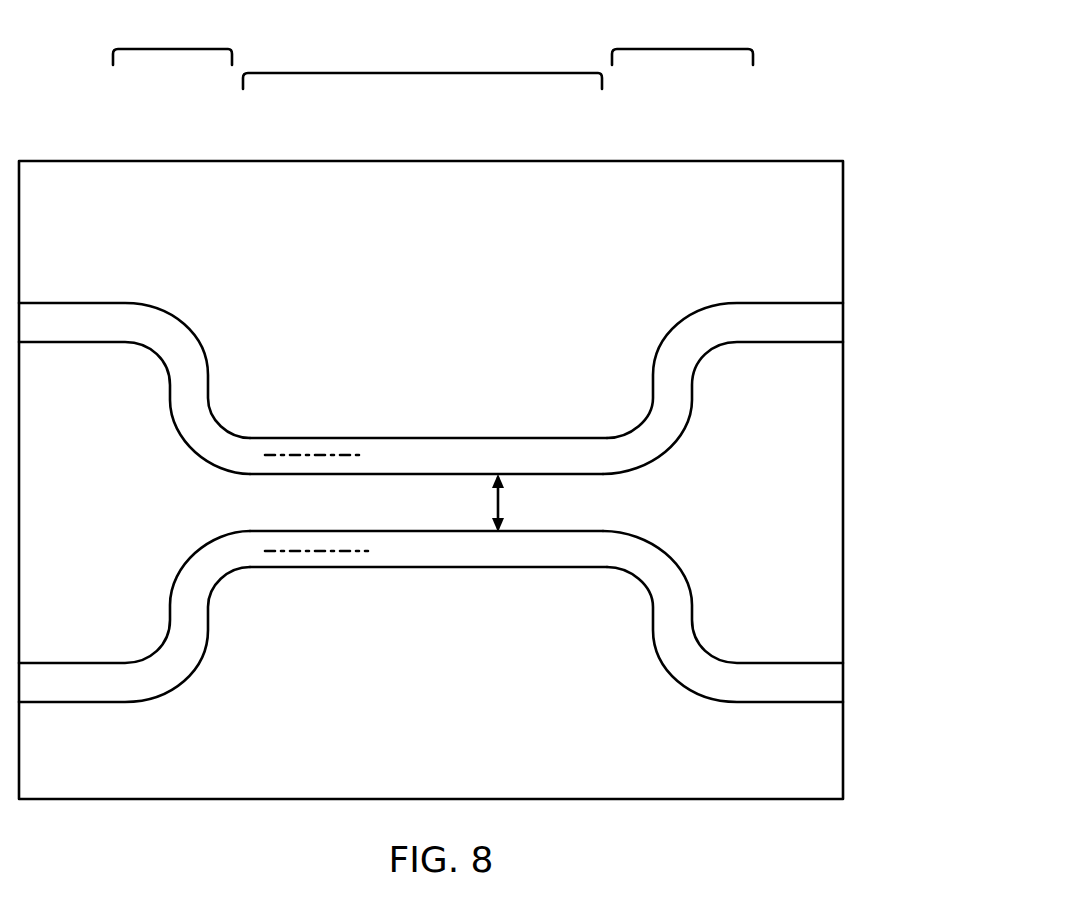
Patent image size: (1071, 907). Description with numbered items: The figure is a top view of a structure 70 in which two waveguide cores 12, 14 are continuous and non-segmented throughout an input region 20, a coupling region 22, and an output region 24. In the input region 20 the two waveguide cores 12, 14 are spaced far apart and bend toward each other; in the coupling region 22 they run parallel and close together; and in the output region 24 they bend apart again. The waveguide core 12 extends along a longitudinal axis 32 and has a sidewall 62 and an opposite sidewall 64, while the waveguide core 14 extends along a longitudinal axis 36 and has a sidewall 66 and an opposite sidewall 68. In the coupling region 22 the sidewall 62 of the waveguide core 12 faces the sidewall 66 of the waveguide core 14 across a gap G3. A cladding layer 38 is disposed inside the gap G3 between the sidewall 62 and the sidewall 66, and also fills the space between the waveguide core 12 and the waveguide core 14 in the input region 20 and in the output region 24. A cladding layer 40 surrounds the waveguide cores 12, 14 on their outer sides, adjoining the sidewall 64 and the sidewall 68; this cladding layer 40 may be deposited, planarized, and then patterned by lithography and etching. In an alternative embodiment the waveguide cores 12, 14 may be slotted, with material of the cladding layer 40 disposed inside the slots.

The waveguide core 12 is at (431, 388).
The waveguide core 14 is at (431, 616).
The input region 20 is at (173, 49).
The coupling region 22 is at (423, 73).
The output region 24 is at (683, 49).
The longitudinal axis 32 is at (298, 455).
The longitudinal axis 36 is at (298, 553).
The cladding layer 38 is at (730, 518).
The cladding layer 40 is at (720, 224).
The sidewall 62 is at (414, 474).
The sidewall 64 is at (465, 438).
The sidewall 66 is at (438, 533).
The sidewall 68 is at (501, 570).
The structure 70 is at (146, 246).
The gap G3 is at (476, 503).